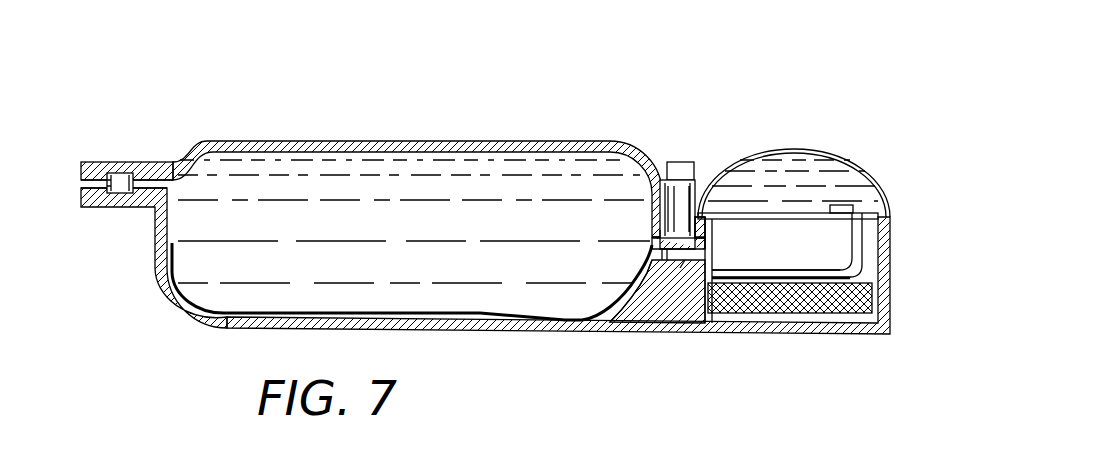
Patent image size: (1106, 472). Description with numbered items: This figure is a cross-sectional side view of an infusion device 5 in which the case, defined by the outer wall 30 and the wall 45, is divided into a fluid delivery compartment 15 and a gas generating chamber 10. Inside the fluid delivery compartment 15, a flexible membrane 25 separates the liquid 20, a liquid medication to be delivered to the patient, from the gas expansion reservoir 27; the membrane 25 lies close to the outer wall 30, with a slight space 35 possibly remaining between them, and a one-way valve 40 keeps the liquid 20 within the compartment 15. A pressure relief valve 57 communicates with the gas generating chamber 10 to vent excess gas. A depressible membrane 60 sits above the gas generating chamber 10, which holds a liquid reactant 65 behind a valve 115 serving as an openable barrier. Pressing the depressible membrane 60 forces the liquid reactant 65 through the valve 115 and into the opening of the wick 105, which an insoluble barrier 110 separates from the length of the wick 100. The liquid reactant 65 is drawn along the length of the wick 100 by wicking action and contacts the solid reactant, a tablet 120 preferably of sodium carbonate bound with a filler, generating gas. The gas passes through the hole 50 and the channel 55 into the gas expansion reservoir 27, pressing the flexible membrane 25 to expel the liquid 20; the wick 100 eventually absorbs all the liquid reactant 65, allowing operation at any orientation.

The infusion device 5 is at (497, 82).
The gas generating chamber 10 is at (952, 100).
The fluid delivery compartment 15 is at (163, 105).
The liquid 20 is at (227, 183).
The flexible membrane 25 is at (157, 282).
The gas expansion reservoir 27 is at (361, 190).
The outer wall 30 is at (247, 330).
The space 35 is at (623, 308).
The one-way valve 40 is at (120, 183).
The wall 45 is at (517, 143).
The hole 50 is at (693, 260).
The channel 55 is at (685, 260).
The pressure relief valve 57 is at (686, 160).
The depressible membrane 60 is at (762, 147).
The liquid reactant 65 is at (803, 165).
The length of the wick 100 is at (865, 272).
The opening of the wick 105 is at (858, 205).
The insoluble barrier 110 is at (797, 220).
The valve 115 is at (830, 211).
The tablet 120 is at (843, 313).